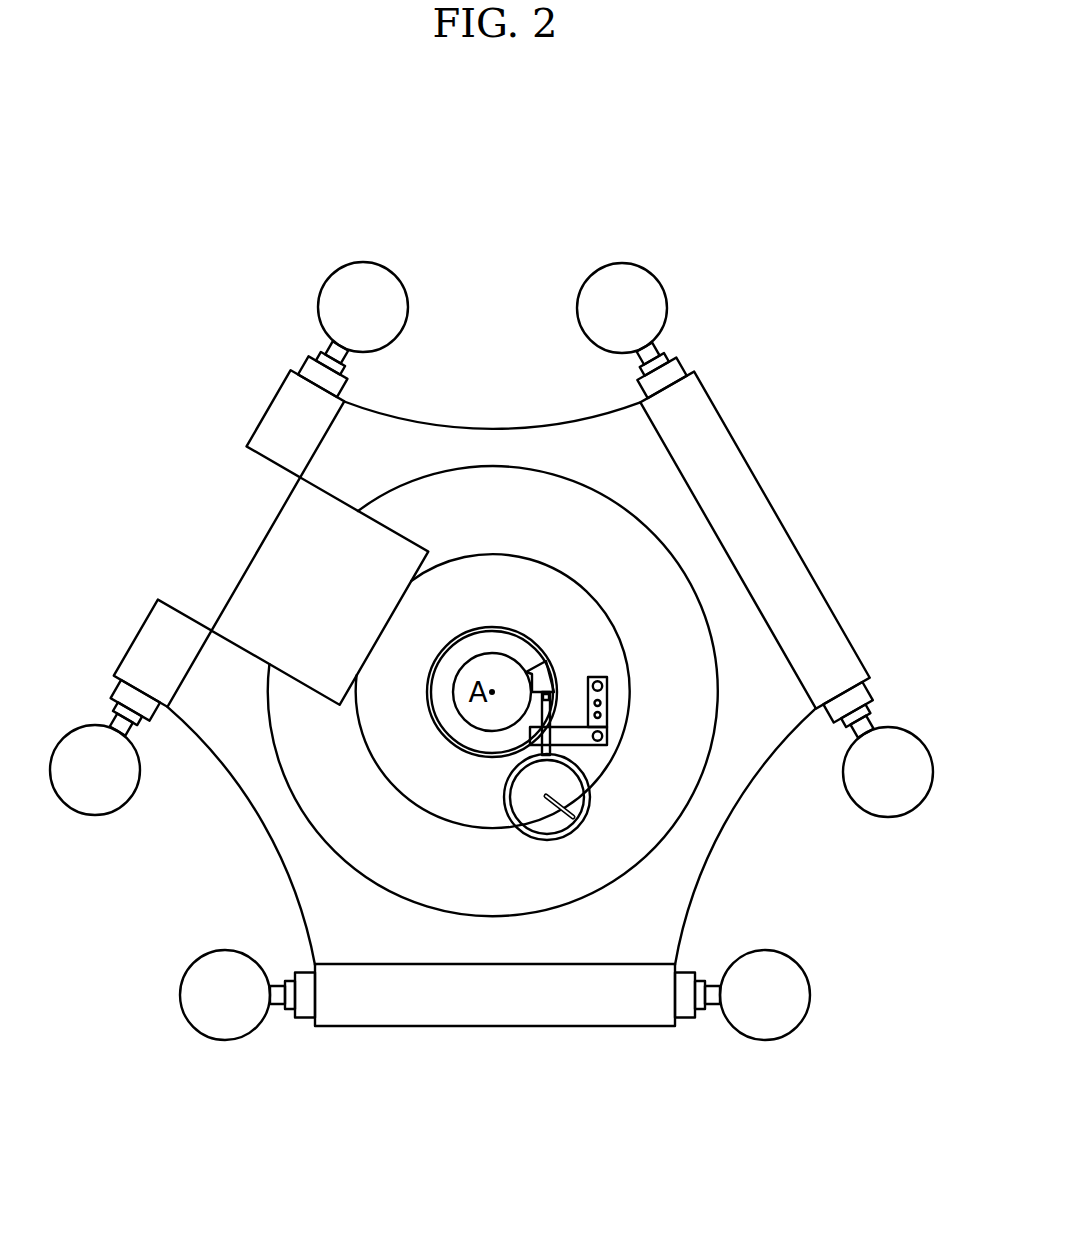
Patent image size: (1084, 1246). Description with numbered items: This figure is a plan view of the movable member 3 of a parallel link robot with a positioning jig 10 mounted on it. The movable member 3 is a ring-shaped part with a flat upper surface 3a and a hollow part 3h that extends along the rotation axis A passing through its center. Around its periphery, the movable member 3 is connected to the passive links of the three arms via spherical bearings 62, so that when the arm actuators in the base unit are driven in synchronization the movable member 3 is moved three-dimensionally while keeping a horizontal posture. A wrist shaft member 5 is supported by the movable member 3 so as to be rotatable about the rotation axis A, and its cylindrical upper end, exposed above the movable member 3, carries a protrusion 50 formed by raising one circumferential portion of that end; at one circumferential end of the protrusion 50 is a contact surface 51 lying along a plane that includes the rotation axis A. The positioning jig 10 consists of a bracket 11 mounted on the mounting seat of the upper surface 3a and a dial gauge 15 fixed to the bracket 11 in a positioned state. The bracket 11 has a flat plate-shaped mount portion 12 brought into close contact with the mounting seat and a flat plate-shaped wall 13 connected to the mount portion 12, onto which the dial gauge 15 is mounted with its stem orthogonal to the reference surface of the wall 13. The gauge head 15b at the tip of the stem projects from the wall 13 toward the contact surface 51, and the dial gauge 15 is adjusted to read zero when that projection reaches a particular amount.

The movable member 3 is at (770, 462).
The upper surface 3a is at (426, 782).
The hollow part 3h is at (431, 676).
The wrist shaft member 5 is at (448, 718).
The positioning jig 10 is at (675, 781).
The bracket 11 is at (662, 747).
The mount portion 12 is at (609, 692).
The wall 13 is at (586, 748).
The dial gauge 15 is at (607, 816).
The gauge head 15b is at (556, 694).
The protrusion 50 is at (535, 660).
The contact surface 51 is at (542, 720).
The spherical bearing 62 is at (361, 262).